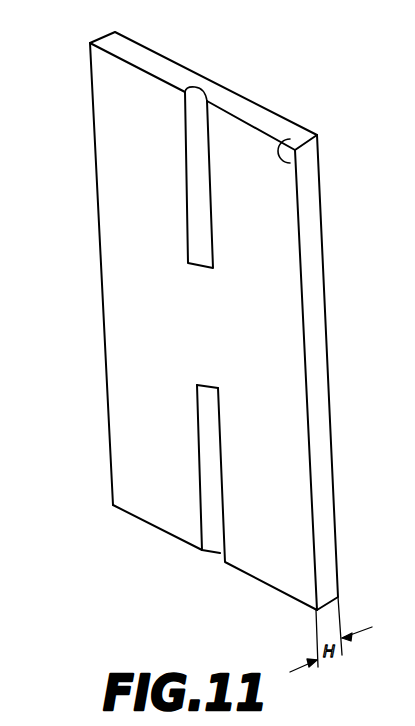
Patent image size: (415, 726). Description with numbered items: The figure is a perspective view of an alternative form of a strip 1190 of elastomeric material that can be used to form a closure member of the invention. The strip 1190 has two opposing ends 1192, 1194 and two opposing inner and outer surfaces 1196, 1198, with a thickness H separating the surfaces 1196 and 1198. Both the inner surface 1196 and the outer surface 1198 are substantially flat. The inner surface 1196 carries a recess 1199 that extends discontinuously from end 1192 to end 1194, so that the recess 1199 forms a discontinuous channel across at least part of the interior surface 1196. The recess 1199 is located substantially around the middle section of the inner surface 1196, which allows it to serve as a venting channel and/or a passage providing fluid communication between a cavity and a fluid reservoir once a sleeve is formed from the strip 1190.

The strip 1190 is at (203, 322).
The end 1192 is at (283, 165).
The end 1194 is at (282, 593).
The inner surface 1196 is at (168, 510).
The outer surface 1198 is at (265, 107).
The recess 1199 is at (195, 89).